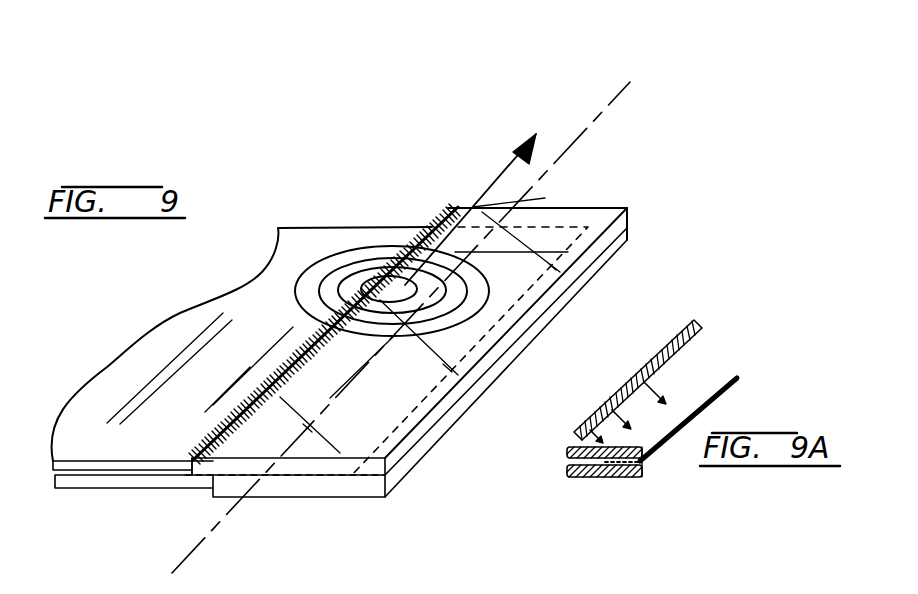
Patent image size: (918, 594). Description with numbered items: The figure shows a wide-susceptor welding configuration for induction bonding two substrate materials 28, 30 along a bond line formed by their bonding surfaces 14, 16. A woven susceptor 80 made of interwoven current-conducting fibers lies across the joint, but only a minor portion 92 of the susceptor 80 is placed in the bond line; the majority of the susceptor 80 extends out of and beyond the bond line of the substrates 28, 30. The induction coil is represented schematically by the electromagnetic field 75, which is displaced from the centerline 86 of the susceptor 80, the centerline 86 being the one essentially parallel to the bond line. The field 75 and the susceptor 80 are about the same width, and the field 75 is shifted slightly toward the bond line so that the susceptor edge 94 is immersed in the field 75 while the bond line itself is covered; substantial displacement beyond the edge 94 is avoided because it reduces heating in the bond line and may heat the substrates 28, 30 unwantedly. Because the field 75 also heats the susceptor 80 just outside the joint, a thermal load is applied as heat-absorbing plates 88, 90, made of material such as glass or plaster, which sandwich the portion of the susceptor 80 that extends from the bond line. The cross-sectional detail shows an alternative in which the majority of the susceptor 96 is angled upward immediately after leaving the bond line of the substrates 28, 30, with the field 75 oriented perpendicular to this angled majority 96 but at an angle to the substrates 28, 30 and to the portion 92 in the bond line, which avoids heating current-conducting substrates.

In FIG. 9, the bonding surface 14 is at (193, 458).
In FIG. 9, the bonding surface 16 is at (192, 473).
In FIG. 9, the substrate material 28 is at (122, 357).
In FIG. 9A, the substrate material 28 is at (570, 443).
In FIG. 9, the substrate material 30 is at (88, 482).
In FIG. 9A, the substrate material 30 is at (610, 478).
In FIG. 9, the electromagnetic field 75 is at (478, 298).
In FIG. 9A, the electromagnetic field 75 is at (708, 381).
In FIG. 9, the woven susceptor 80 is at (378, 423).
In FIG. 9A, the woven susceptor 80 is at (717, 398).
In FIG. 9, the centerline 86 is at (630, 86).
In FIG. 9, the thermal load plate 88 is at (600, 225).
In FIG. 9, the thermal load plate 90 is at (628, 236).
In FIG. 9, the minor portion of susceptor 92 is at (298, 340).
In FIG. 9, the susceptor edge 94 is at (243, 397).
In FIG. 9A, the majority of susceptor 96 is at (648, 460).